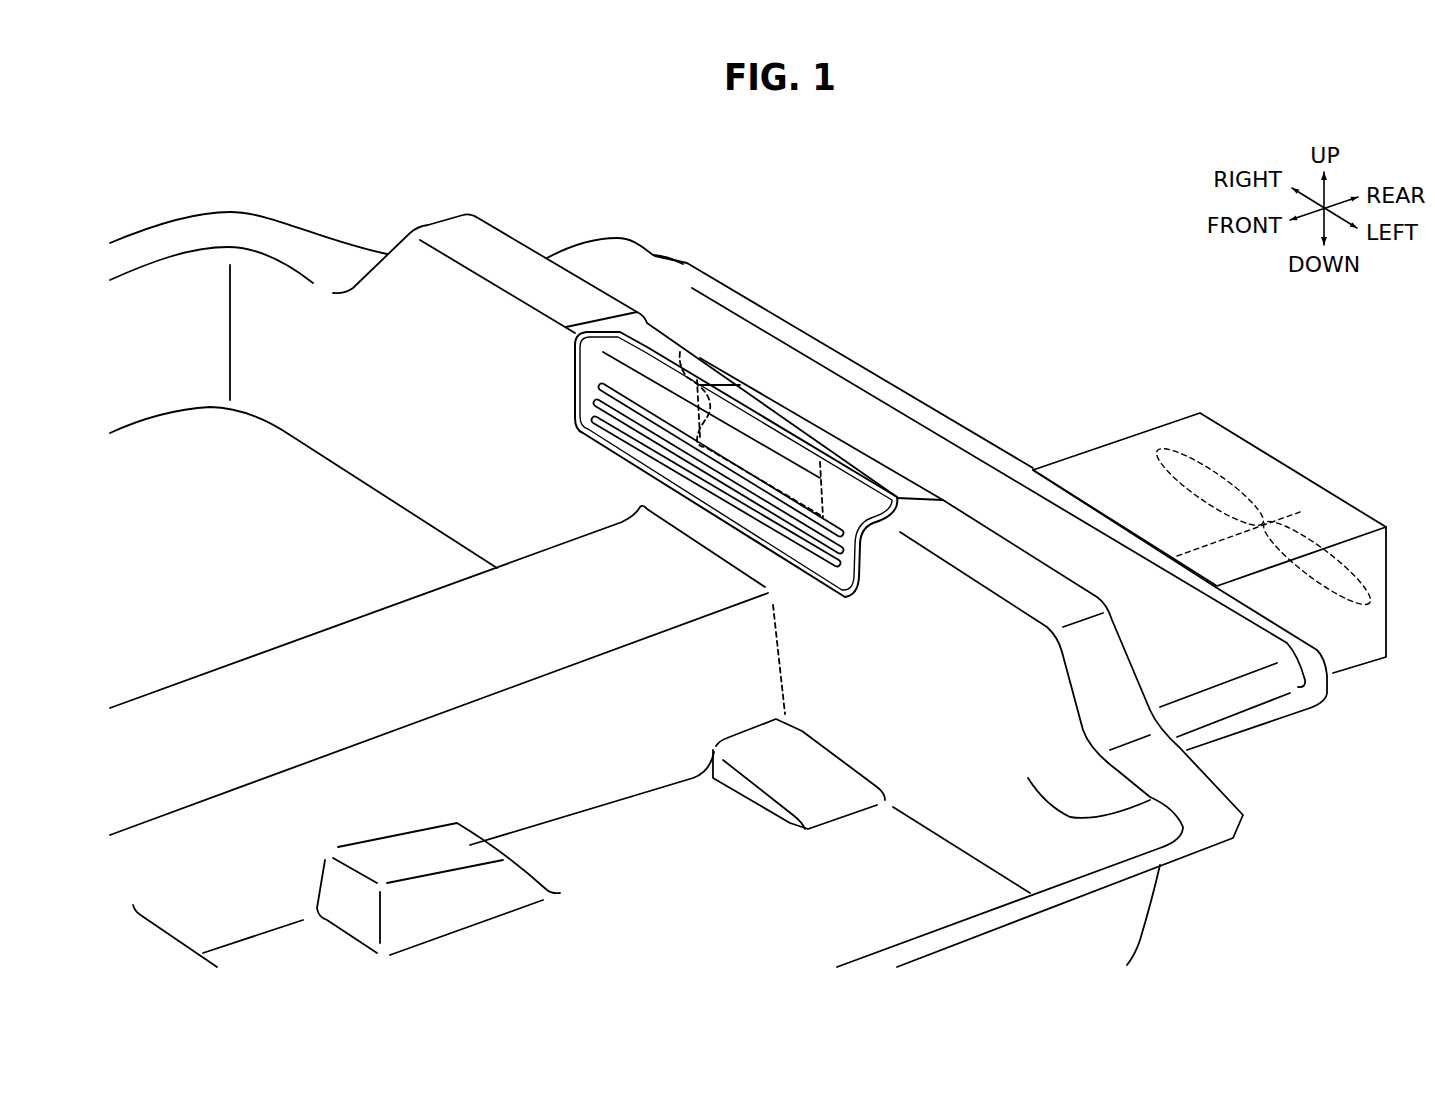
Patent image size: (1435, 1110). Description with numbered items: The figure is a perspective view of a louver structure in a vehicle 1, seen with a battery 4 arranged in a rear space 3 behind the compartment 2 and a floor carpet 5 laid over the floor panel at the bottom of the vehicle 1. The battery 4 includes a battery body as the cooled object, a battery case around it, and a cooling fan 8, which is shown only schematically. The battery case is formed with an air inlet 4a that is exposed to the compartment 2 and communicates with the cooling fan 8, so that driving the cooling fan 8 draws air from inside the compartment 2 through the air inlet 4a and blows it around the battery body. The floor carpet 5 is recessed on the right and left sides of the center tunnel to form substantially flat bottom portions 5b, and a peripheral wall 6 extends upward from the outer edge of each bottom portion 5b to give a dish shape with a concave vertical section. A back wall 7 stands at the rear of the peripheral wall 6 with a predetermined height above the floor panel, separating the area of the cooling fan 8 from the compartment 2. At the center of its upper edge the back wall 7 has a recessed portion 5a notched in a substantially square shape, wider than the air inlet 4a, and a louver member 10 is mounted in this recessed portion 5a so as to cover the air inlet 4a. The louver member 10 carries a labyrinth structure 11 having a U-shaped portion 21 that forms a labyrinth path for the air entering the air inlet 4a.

The vehicle 1 is at (274, 179).
The compartment 2 is at (448, 460).
The rear space 3 is at (519, 198).
The battery 4 is at (808, 318).
The air inlet 4a is at (680, 352).
The floor carpet 5 is at (1200, 772).
The recessed portion 5a is at (787, 520).
The bottom portion 5b is at (260, 607).
The peripheral wall 6 is at (1120, 922).
The back wall 7 is at (992, 637).
The cooling fan 8 is at (1282, 447).
The louver member 10 is at (572, 364).
The labyrinth structure 11 is at (712, 492).
The U-shaped portion 21 is at (600, 378).